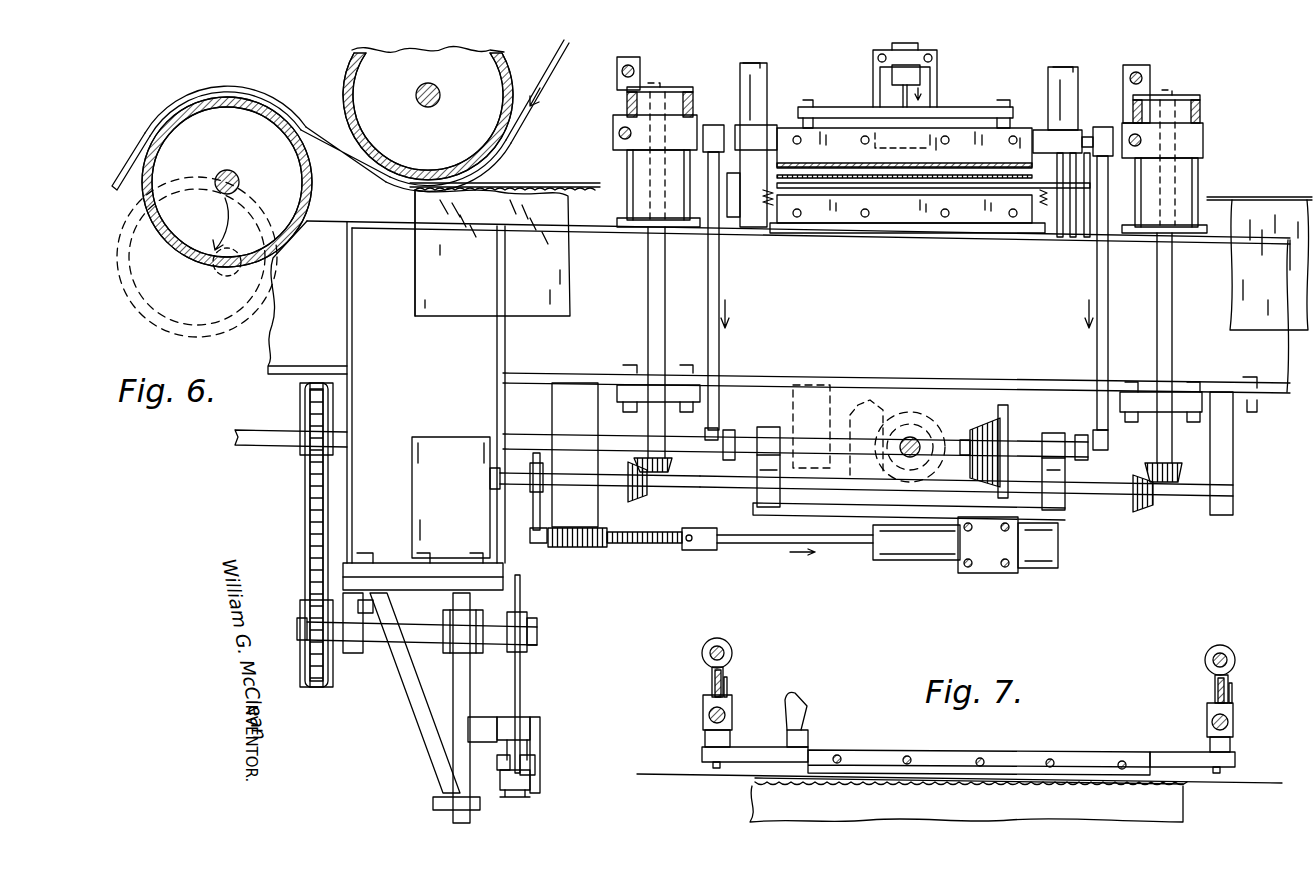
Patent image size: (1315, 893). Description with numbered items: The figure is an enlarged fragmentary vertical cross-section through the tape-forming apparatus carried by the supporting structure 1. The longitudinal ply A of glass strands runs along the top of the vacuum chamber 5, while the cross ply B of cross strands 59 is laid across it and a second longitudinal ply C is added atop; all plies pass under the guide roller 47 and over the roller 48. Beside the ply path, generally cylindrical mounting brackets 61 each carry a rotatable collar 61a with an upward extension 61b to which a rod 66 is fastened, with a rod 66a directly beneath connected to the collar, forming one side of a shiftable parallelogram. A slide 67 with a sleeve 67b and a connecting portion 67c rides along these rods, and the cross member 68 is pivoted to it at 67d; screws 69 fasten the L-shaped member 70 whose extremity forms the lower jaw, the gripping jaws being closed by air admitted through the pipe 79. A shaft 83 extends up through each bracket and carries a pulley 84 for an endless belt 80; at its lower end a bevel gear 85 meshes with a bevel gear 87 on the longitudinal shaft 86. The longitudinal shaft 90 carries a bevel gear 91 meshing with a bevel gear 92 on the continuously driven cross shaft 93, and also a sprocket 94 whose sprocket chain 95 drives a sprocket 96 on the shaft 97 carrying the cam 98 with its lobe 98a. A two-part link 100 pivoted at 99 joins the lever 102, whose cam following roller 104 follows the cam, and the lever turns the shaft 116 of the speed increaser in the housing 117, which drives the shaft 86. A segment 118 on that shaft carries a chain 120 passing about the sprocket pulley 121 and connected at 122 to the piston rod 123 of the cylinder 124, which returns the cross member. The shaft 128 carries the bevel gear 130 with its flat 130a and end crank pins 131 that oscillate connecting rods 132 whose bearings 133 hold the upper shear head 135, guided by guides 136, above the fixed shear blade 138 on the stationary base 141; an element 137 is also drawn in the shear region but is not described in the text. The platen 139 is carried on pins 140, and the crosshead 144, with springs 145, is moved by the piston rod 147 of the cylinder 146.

In FIG. 6, the supporting structure 1 is at (345, 223).
In FIG. 6, the vacuum chamber 5 is at (420, 240).
In FIG. 7, the vacuum chamber 5 is at (1183, 812).
In FIG. 6, the guide roller 47 is at (352, 68).
In FIG. 6, the roller 48 is at (318, 178).
In FIG. 6, the longitudinal ply A is at (583, 190).
In FIG. 7, the longitudinal ply A is at (1266, 777).
In FIG. 6, the cross ply B is at (495, 183).
In FIG. 7, the cross ply B is at (1002, 784).
In FIG. 6, the second longitudinal ply C is at (536, 78).
In FIG. 6, the cross strands 59 is at (832, 190).
In FIG. 6, the mounting bracket 61 is at (629, 162).
In FIG. 6, the collar 61a is at (613, 139).
In FIG. 6, the upward extension 61b is at (617, 62).
In FIG. 6, the rod 66 is at (636, 69).
In FIG. 7, the rod 66 is at (725, 651).
In FIG. 6, the rod 66a is at (619, 130).
In FIG. 7, the rod 66a is at (708, 715).
In FIG. 7, the slide 67 is at (707, 643).
In FIG. 7, the sleeve 67b is at (733, 713).
In FIG. 7, the portion 67c is at (728, 684).
In FIG. 7, the pivot 67d is at (712, 770).
In FIG. 7, the cross member 68 is at (775, 750).
In FIG. 7, the screws 69 is at (842, 755).
In FIG. 7, the L-shaped member 70 is at (960, 757).
In FIG. 7, the pipe 79 is at (802, 702).
In FIG. 6, the endless belt 80 is at (693, 100).
In FIG. 7, the endless belt 80 is at (724, 675).
In FIG. 6, the shaft 83 is at (660, 85).
In FIG. 6, the pulley 84 is at (690, 88).
In FIG. 6, the bevel gear 85 is at (672, 464).
In FIG. 6, the longitudinal shaft 86 is at (722, 486).
In FIG. 6, the bevel gear 87 is at (643, 497).
In FIG. 6, the longitudinal shaft 90 is at (290, 430).
In FIG. 6, the bevel gear 91 is at (858, 400).
In FIG. 6, the bevel gear 92 is at (928, 405).
In FIG. 6, the cross shaft 93 is at (918, 442).
In FIG. 6, the sprocket 94 is at (300, 390).
In FIG. 6, the sprocket chain 95 is at (306, 515).
In FIG. 6, the sprocket 96 is at (300, 592).
In FIG. 6, the shaft 97 is at (298, 624).
In FIG. 6, the cam 98 is at (522, 682).
In FIG. 6, the lobe 98a is at (536, 752).
In FIG. 6, the pivot 99 is at (541, 722).
In FIG. 6, the two-part link 100 is at (500, 760).
In FIG. 6, the lever 102 is at (512, 797).
In FIG. 6, the cam following roller 104 is at (522, 788).
In FIG. 6, the shaft 116 is at (516, 479).
In FIG. 6, the housing 117 is at (448, 445).
In FIG. 6, the segment 118 is at (534, 500).
In FIG. 6, the chain 120 is at (530, 540).
In FIG. 6, the sprocket pulley 121 is at (592, 548).
In FIG. 6, the connection 122 is at (705, 550).
In FIG. 6, the piston rod 123 is at (838, 540).
In FIG. 6, the cylinder 124 is at (915, 552).
In FIG. 6, the shaft 128 is at (812, 430).
In FIG. 6, the bevel gear 130 is at (982, 420).
In FIG. 6, the flat 130a is at (1007, 418).
In FIG. 6, the eccentric crank pin 131 is at (706, 432).
In FIG. 6, the connecting rod 132 is at (719, 368).
In FIG. 6, the bearing 133 is at (718, 124).
In FIG. 6, the upper shear head 135 is at (1043, 130).
In FIG. 6, the guide 136 is at (765, 65).
In FIG. 6, the upper plate 137 is at (878, 163).
In FIG. 6, the fixed shear blade 138 is at (962, 200).
In FIG. 6, the platen 139 is at (922, 183).
In FIG. 6, the pin 140 is at (738, 215).
In FIG. 6, the stationary base 141 is at (790, 210).
In FIG. 6, the crosshead 144 is at (945, 112).
In FIG. 6, the spring 145 is at (810, 116).
In FIG. 6, the cylinder 146 is at (920, 72).
In FIG. 6, the piston rod 147 is at (924, 86).